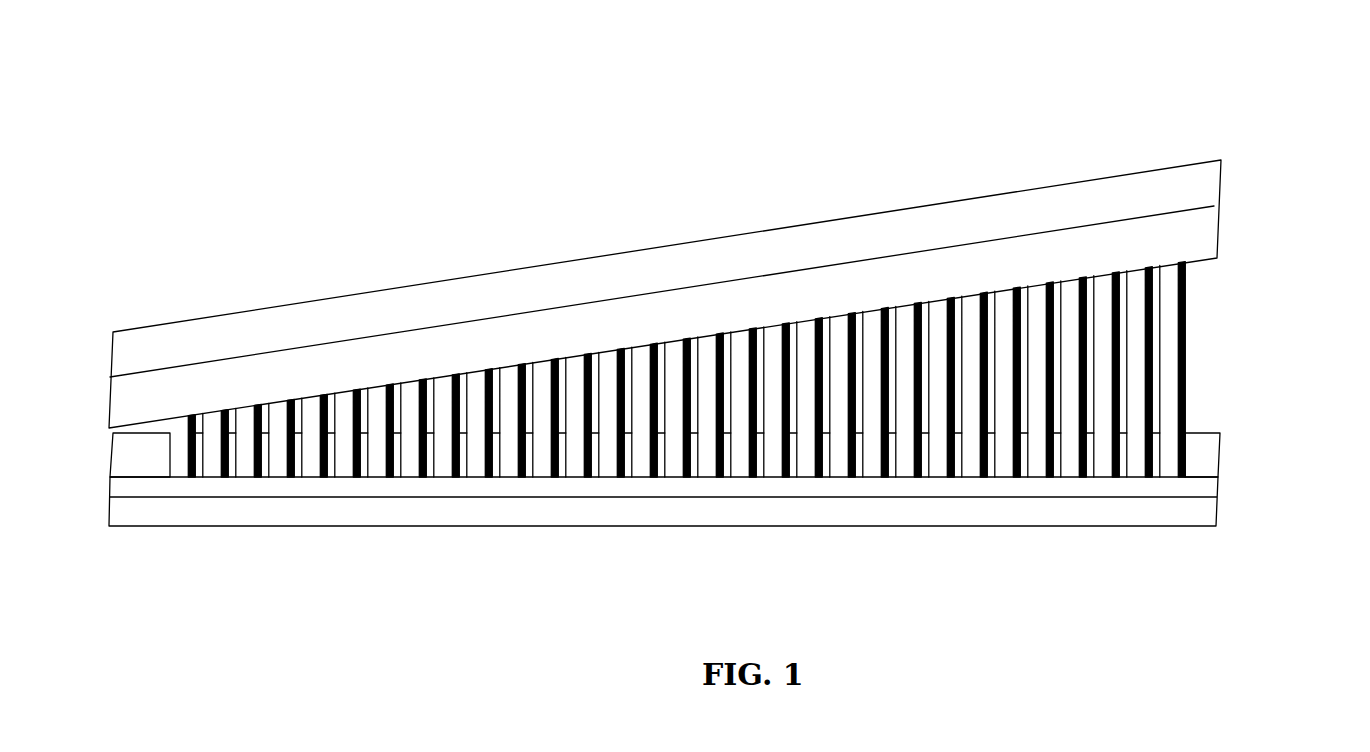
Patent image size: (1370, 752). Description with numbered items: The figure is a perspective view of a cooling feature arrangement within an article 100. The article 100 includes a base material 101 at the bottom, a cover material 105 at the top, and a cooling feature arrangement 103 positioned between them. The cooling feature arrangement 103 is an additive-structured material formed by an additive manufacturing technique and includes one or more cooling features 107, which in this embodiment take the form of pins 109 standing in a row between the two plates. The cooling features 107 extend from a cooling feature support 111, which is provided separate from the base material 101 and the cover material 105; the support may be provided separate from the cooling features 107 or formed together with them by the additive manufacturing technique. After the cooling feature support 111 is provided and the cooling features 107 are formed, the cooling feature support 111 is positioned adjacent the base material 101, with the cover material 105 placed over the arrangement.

The article 100 is at (730, 337).
The base material 101 is at (1222, 512).
The cooling feature arrangement 103 is at (769, 361).
The cover material 105 is at (1158, 200).
The cooling features 107 is at (1137, 457).
The pins 109 is at (905, 332).
The cooling feature support 111 is at (1210, 450).